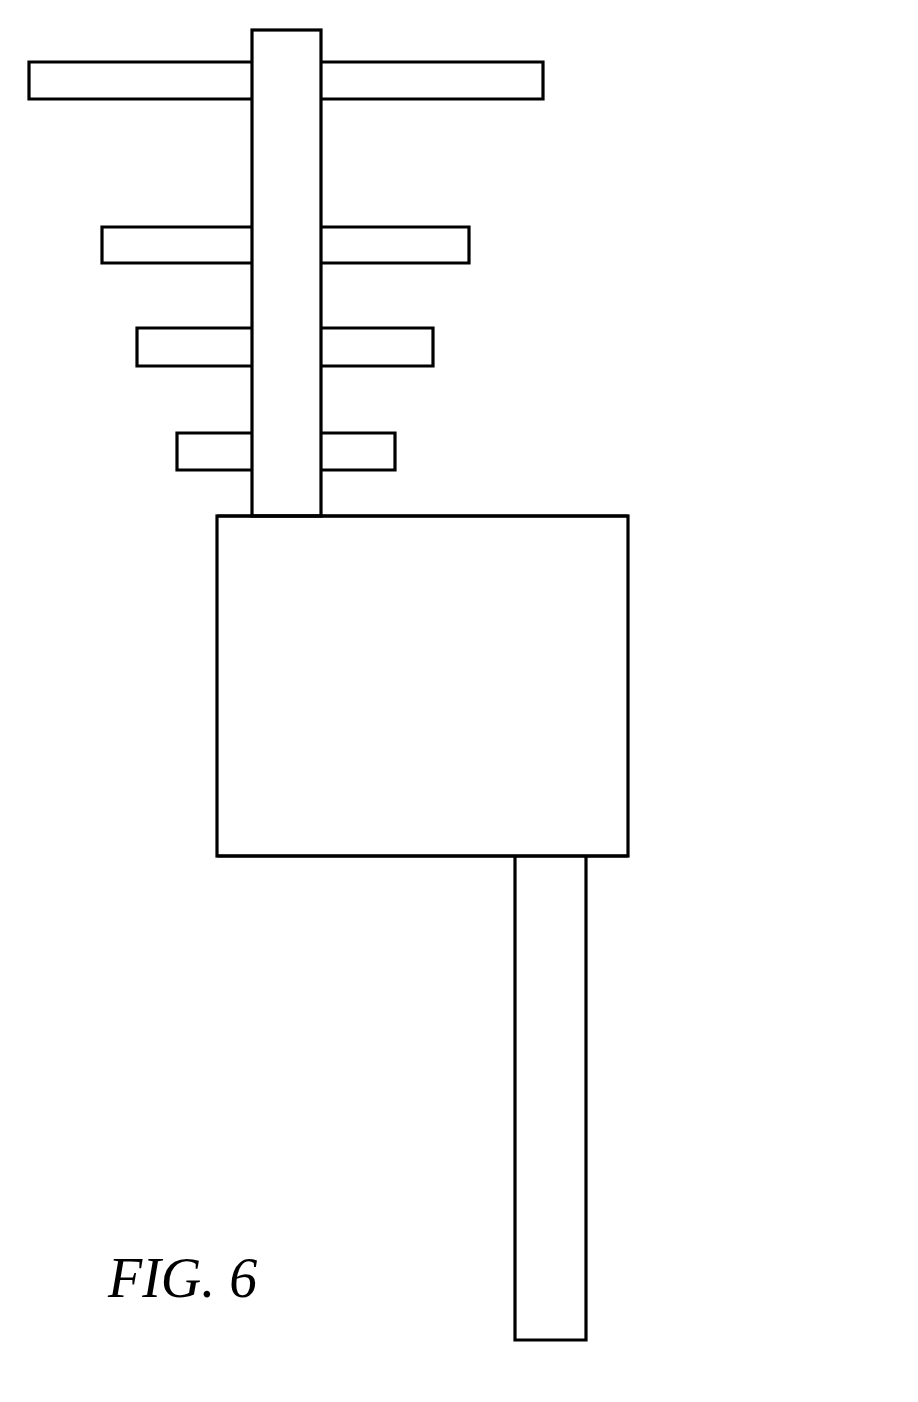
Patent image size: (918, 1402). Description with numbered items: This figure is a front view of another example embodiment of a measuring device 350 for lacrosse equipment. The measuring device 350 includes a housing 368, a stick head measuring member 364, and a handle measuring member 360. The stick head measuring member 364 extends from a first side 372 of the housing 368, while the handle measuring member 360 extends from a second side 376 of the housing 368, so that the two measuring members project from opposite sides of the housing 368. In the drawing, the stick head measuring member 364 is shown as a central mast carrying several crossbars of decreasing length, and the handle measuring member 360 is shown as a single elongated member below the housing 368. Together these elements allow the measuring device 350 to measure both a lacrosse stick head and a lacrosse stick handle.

The measuring device 350 is at (753, 989).
The handle measuring member 360 is at (568, 1122).
The stick head measuring member 364 is at (455, 297).
The housing 368 is at (547, 686).
The first side of the housing 372 is at (571, 506).
The second side of the housing 376 is at (272, 868).